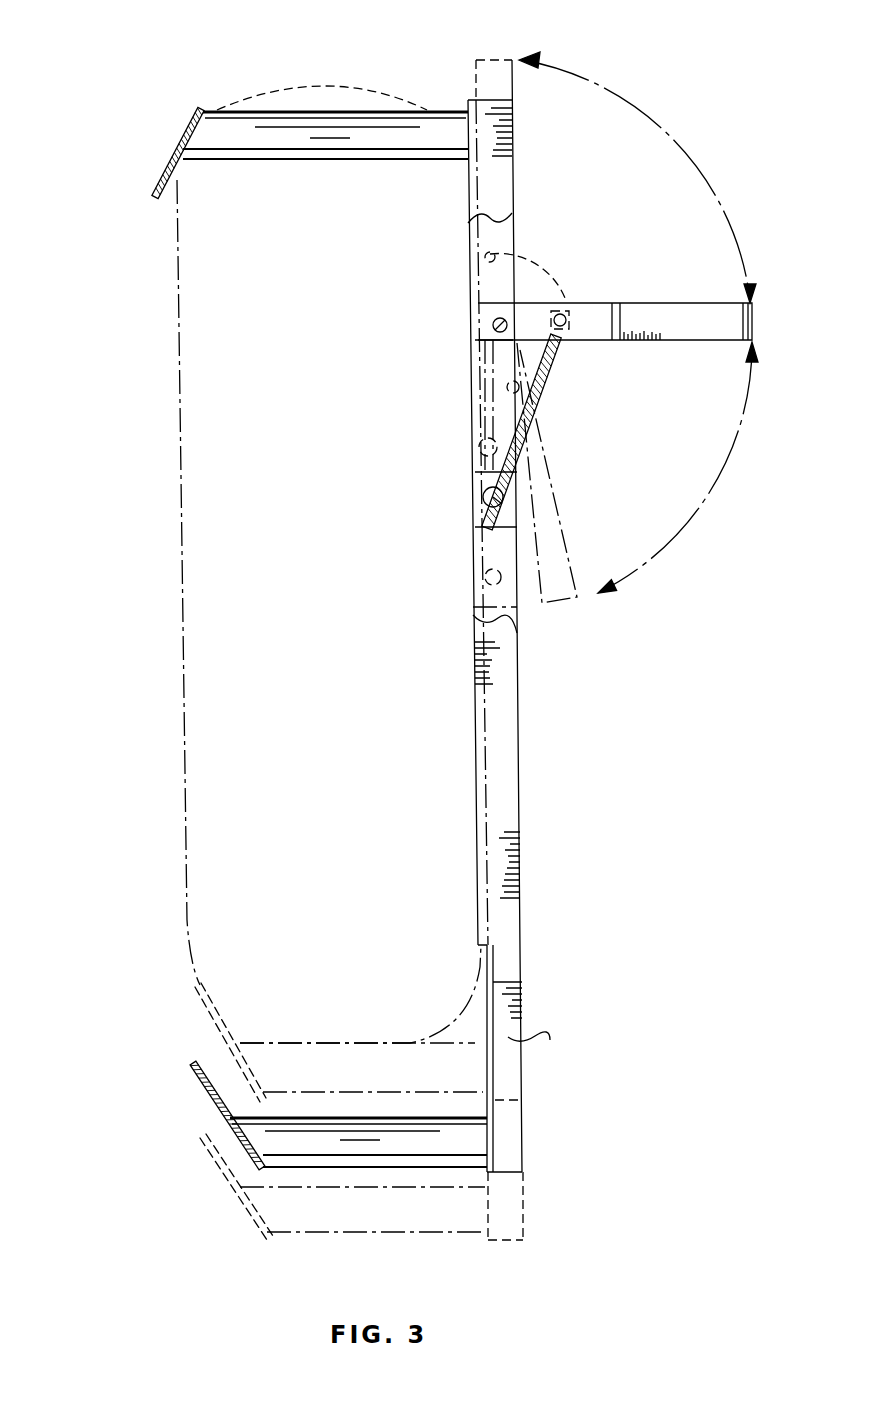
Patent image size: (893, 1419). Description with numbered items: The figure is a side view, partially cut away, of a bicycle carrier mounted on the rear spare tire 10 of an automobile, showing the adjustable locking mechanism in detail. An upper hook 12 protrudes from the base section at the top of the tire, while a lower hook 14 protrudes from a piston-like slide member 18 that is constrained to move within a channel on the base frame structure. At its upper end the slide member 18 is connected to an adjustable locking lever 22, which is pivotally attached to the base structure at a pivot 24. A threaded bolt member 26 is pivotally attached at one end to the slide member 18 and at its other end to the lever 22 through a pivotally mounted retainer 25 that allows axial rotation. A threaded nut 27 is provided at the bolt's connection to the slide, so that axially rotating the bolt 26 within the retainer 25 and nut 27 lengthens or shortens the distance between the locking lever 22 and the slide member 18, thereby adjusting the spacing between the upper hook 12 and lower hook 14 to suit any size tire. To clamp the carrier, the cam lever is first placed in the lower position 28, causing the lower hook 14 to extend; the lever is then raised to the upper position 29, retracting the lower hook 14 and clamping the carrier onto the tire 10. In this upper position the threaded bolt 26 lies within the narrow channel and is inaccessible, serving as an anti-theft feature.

The spare tire 10 is at (287, 613).
The upper hook 12 is at (250, 133).
The lower hook 14 is at (260, 1112).
The slide member 18 is at (510, 1037).
The locking lever 22 is at (670, 313).
The pivot 24 is at (512, 313).
The retainer 25 is at (567, 325).
The threaded bolt member 26 is at (552, 373).
The threaded nut 27 is at (517, 508).
The lower position 28 is at (603, 610).
The upper position 29 is at (603, 12).